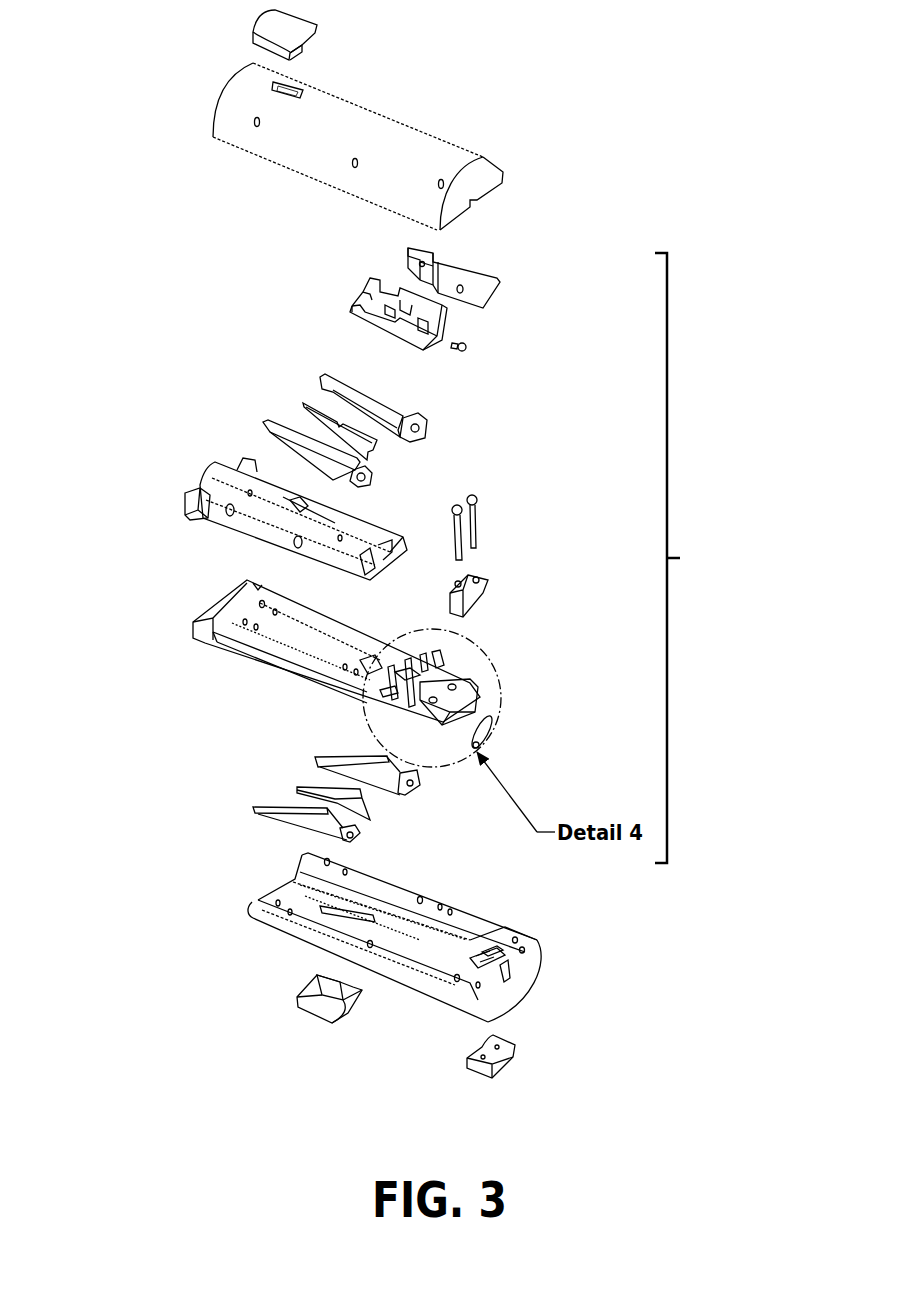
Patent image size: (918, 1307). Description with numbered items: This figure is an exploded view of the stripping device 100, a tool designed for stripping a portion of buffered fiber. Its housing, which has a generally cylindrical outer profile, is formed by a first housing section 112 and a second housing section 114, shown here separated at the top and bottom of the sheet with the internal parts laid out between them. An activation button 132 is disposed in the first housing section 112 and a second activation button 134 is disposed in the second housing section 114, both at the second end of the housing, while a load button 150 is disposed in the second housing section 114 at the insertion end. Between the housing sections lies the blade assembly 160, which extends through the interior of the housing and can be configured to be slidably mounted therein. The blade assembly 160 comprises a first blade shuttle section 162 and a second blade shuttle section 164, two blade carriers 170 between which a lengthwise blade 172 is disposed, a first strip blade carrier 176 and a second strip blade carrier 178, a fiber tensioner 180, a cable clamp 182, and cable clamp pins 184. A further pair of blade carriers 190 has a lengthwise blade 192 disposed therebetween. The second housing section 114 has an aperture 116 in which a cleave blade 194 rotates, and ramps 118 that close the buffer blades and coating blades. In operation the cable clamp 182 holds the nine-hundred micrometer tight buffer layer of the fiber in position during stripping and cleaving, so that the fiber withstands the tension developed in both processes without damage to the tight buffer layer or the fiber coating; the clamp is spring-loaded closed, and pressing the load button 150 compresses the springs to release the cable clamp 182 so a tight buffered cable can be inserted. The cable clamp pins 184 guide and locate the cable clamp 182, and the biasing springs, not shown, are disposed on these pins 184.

The stripping device 100 is at (688, 160).
The first housing section 112 is at (452, 160).
The second housing section 114 is at (528, 963).
The aperture 116 is at (492, 947).
The ramps 118 is at (420, 898).
The activation button 132 is at (280, 25).
The activation button 134 is at (298, 1000).
The load button 150 is at (477, 1052).
The blade assembly 160 is at (695, 558).
The first blade shuttle section 162 is at (227, 667).
The second blade shuttle section 164 is at (228, 487).
The blade carriers 170 is at (370, 473).
The lengthwise blade 172 is at (302, 400).
The first strip blade carrier 176 is at (365, 302).
The second strip blade carrier 178 is at (490, 275).
The fiber tensioner 180 is at (468, 339).
The cable clamp 182 is at (478, 593).
The cable clamp pins 184 is at (467, 540).
The blade carriers 190 is at (343, 838).
The lengthwise blade 192 is at (328, 790).
The cleave blade 194 is at (505, 720).